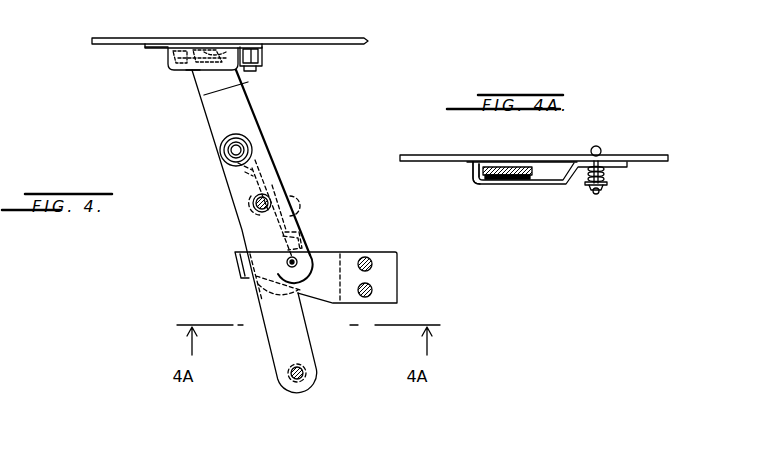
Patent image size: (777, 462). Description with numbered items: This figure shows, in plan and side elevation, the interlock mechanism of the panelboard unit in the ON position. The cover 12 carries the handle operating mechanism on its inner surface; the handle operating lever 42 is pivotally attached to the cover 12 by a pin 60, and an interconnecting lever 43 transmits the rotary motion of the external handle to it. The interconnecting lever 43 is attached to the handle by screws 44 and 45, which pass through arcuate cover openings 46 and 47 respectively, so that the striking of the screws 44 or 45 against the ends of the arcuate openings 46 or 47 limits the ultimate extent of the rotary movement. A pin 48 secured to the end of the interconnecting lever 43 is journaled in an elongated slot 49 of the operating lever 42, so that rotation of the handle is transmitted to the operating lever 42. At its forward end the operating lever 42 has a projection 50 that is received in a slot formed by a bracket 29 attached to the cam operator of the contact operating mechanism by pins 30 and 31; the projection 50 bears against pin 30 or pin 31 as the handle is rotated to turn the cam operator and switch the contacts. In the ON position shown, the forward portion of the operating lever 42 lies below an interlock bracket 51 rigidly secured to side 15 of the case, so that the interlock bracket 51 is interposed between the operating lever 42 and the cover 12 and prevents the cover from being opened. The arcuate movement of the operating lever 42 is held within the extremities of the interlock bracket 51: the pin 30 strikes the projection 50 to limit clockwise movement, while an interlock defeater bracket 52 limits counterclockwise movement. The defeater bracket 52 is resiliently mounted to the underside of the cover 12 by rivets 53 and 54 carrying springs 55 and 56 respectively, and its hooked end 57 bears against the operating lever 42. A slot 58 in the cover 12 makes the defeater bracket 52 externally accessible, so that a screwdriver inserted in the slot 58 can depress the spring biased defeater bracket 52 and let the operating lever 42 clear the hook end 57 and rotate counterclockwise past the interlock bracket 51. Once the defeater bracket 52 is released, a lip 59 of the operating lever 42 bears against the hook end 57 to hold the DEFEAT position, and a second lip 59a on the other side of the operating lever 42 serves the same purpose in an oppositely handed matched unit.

In FIG. 4A, the cover 12 is at (533, 154).
In FIG. 4, the side portion 15 is at (297, 38).
In FIG. 4, the bracket 29 is at (265, 56).
In FIG. 4, the pin 30 is at (248, 69).
In FIG. 4, the pin 31 is at (192, 72).
In FIG. 4, the handle operating lever 42 is at (213, 113).
In FIG. 4, the interconnecting lever 43 is at (265, 188).
In FIG. 4, the screw 44 is at (300, 258).
In FIG. 4, the screw 45 is at (284, 184).
In FIG. 4, the arcuate cover opening 46 is at (295, 238).
In FIG. 4, the arcuate cover opening 47 is at (302, 196).
In FIG. 4, the pin 48 is at (244, 148).
In FIG. 4, the elongated slot 49 is at (227, 195).
In FIG. 4, the handle operating lever projection 50 is at (216, 45).
In FIG. 4, the interlock bracket 51 is at (146, 70).
In FIG. 4, the interlock defeater bracket 52 is at (322, 265).
In FIG. 4A, the interlock defeater bracket 52 is at (511, 186).
In FIG. 4A, the rivet 53 is at (610, 204).
In FIG. 4A, the rivet 54 is at (599, 194).
In FIG. 4A, the spring 55 is at (619, 178).
In FIG. 4A, the spring 56 is at (607, 177).
In FIG. 4, the hooked end 57 is at (220, 256).
In FIG. 4A, the hooked end 57 is at (470, 170).
In FIG. 4, the slot 58 is at (342, 270).
In FIG. 4A, the slot 58 is at (575, 157).
In FIG. 4A, the lip 59 is at (480, 186).
In FIG. 4A, the lip 59a is at (531, 177).
In FIG. 4, the pin 60 is at (308, 374).